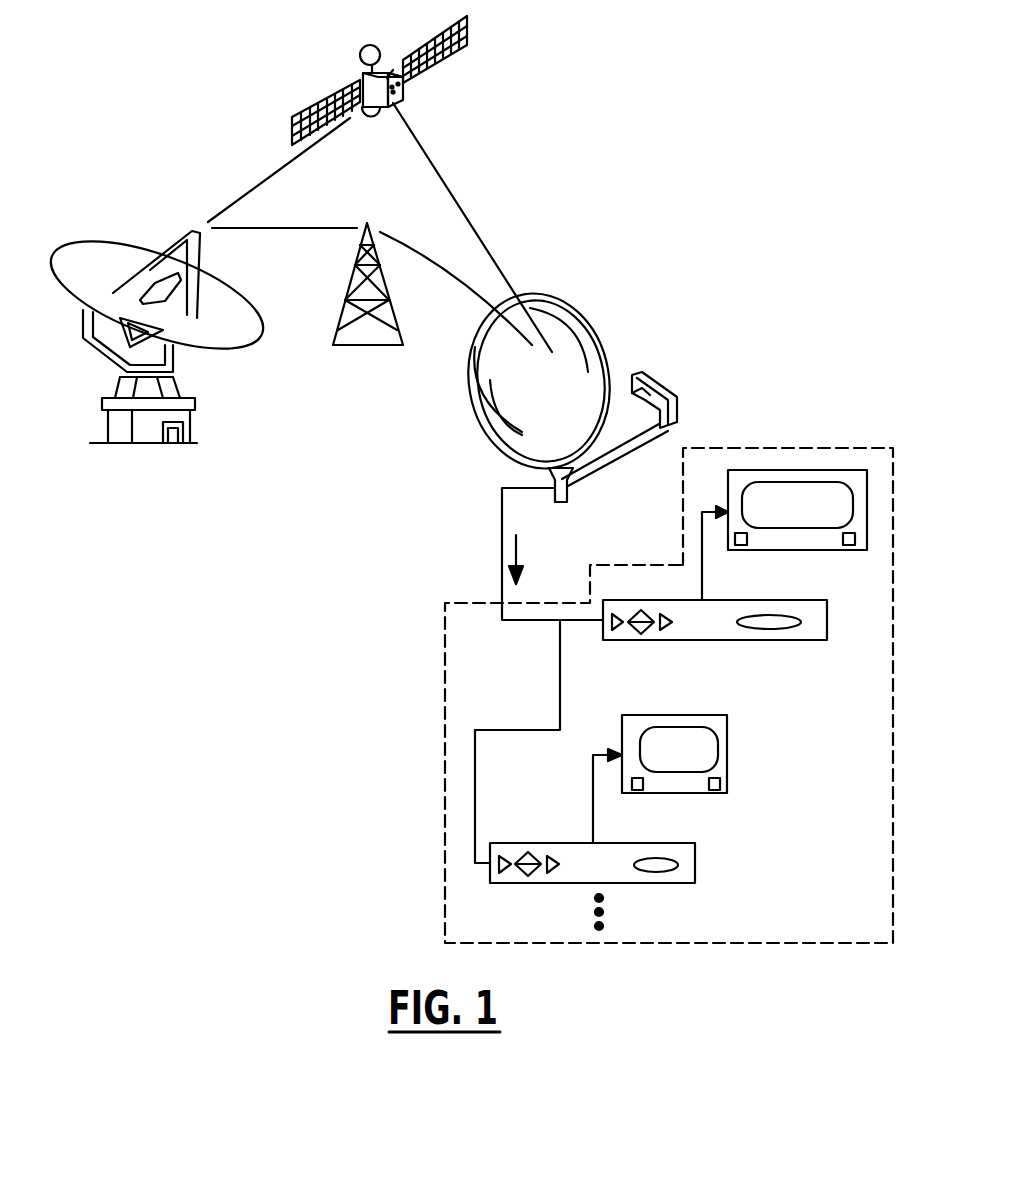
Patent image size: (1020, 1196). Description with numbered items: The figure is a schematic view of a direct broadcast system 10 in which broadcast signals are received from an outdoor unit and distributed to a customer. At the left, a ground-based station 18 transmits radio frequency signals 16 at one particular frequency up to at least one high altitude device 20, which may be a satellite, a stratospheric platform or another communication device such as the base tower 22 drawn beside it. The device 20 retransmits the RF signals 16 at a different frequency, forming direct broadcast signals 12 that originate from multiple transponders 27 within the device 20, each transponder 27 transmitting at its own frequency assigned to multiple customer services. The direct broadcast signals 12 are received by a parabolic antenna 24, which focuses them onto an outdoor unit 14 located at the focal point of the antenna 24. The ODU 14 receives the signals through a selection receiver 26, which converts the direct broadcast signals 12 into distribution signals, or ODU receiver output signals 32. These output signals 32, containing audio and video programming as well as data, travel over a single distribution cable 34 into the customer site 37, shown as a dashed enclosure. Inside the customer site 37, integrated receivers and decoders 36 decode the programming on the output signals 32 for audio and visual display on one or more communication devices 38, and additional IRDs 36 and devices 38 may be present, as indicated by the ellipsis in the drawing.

The direct broadcast system 10 is at (665, 136).
The direct broadcast signals 12 is at (435, 271).
The outdoor unit (ODU) 14 is at (587, 333).
The radio frequency (RF) signals 16 is at (266, 182).
The ground-based station 18 is at (197, 402).
The high altitude device 20 is at (395, 100).
The base tower 22 is at (348, 283).
The parabolic antenna 24 is at (552, 330).
The selection receiver (ODU receiver) 26 is at (679, 397).
The transponders 27 is at (390, 72).
The ODU receiver output signals 32 is at (518, 553).
The single distribution cable 34 is at (500, 510).
The integrated receivers and decoders (IRDs) 36 is at (828, 618).
The customer site 37 is at (894, 490).
The communication devices 38 is at (813, 470).